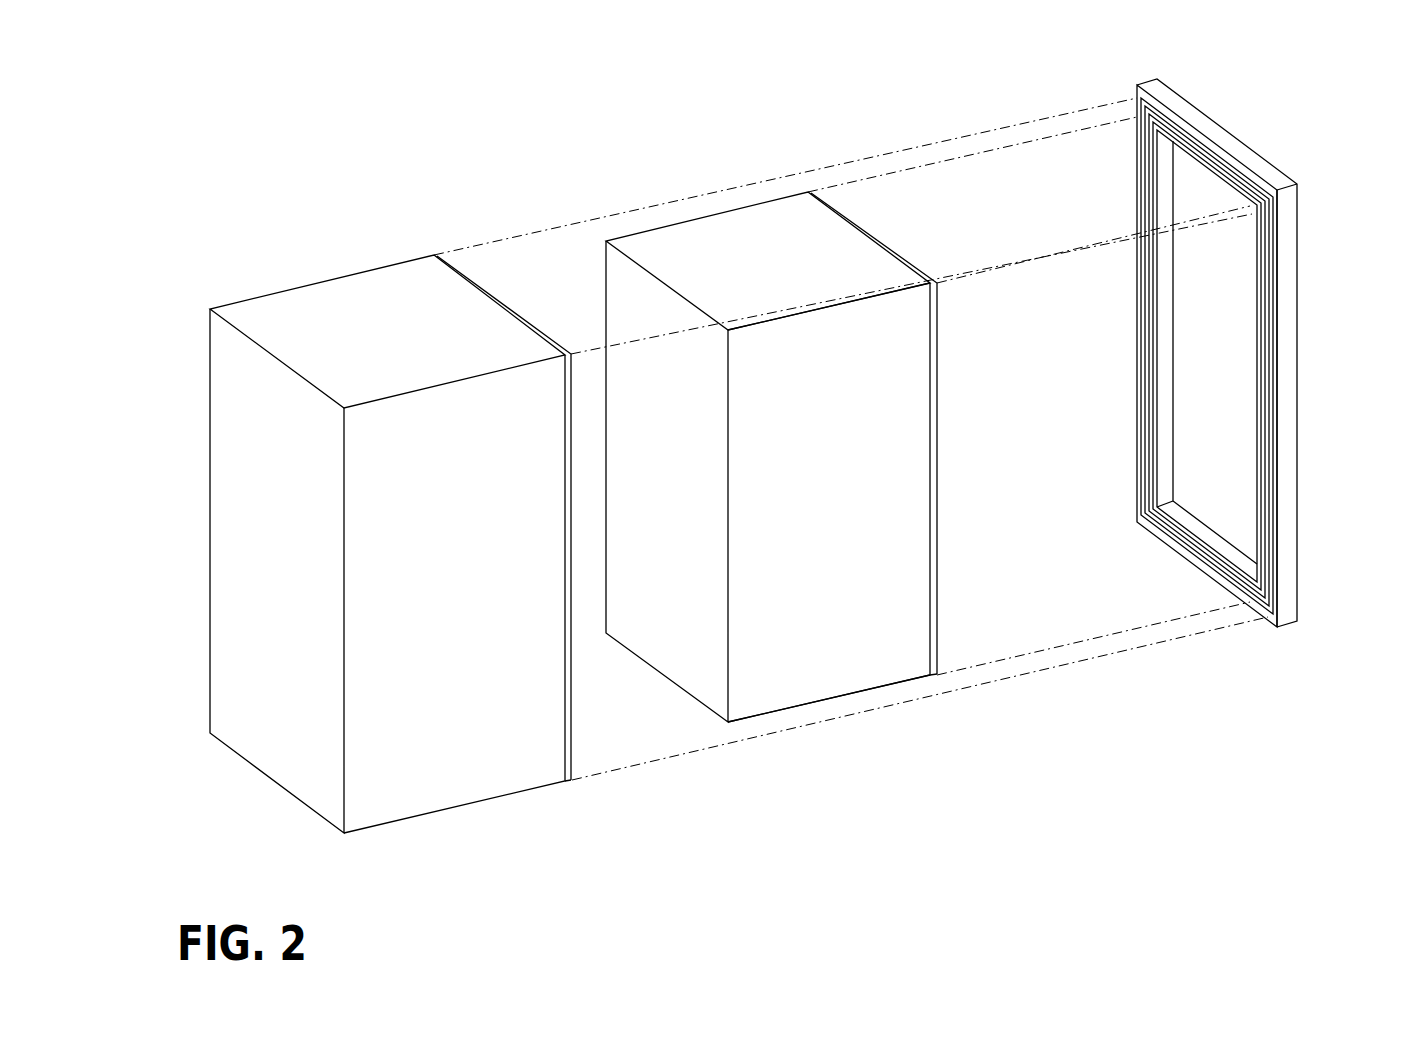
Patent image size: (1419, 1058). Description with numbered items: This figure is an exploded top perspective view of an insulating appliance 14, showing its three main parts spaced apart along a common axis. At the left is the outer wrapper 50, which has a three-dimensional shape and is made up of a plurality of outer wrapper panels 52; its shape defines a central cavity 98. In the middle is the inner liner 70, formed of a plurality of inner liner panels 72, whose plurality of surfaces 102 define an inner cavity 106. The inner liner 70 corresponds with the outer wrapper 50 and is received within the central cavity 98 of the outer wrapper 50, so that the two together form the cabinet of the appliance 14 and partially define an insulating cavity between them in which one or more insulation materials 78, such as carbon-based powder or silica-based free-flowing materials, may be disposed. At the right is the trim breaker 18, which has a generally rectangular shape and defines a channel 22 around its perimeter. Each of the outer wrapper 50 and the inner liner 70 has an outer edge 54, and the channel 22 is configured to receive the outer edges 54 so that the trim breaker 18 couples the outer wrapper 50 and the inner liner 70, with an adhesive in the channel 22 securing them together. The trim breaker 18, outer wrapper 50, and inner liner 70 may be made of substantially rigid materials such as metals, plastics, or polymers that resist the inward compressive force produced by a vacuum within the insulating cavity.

The insulating appliance 14 is at (417, 127).
The trim breaker 18 is at (1205, 132).
The channel 22 is at (1237, 172).
The outer wrapper 50 is at (332, 300).
The outer wrapper panels 52 is at (235, 280).
The outer edge 54 is at (485, 290).
The inner liner 70 is at (733, 242).
The inner liner panels 72 is at (643, 170).
The insulation materials 78 is at (1282, 410).
The central cavity 98 is at (575, 703).
The surfaces 102 is at (780, 187).
The inner cavity 106 is at (941, 598).